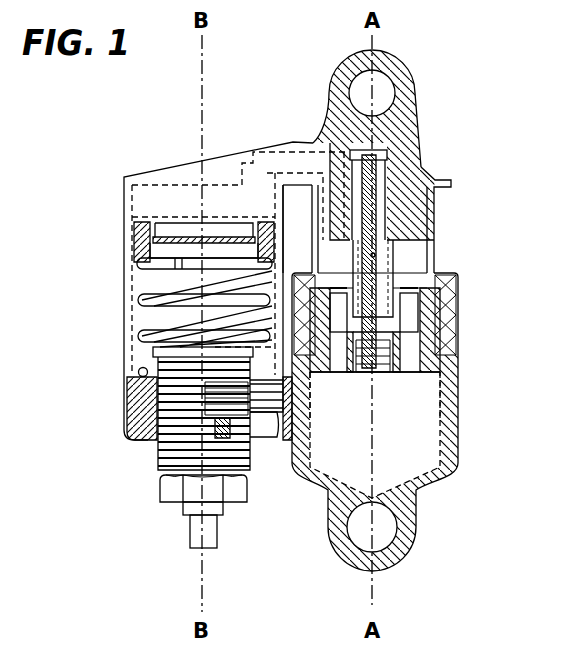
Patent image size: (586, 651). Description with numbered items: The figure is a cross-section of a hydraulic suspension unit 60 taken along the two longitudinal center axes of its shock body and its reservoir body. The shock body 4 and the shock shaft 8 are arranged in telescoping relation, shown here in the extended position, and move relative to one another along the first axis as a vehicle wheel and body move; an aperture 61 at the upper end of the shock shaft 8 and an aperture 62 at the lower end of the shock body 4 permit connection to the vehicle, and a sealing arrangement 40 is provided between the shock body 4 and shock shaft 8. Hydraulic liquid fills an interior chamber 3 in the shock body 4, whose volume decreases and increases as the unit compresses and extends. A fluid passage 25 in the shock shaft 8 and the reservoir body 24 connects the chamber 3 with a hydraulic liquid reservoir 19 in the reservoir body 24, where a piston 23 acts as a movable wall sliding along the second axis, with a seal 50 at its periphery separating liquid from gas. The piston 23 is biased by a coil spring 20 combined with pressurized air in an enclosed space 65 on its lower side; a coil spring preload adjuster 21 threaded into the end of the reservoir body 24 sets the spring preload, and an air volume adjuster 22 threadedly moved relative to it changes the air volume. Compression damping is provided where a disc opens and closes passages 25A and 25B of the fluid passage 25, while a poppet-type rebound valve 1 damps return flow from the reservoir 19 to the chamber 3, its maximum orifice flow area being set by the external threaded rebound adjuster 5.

The rebound valve 1 is at (398, 333).
The interior chamber 3 is at (392, 455).
The shock body 4 is at (456, 439).
The threaded rebound adjuster 5 is at (396, 167).
The shock shaft 8 is at (437, 243).
The hydraulic liquid reservoir 19 is at (166, 207).
The coil spring 20 is at (150, 327).
The coil spring preload adjuster 21 is at (152, 410).
The air volume adjuster 22 is at (160, 487).
The piston 23 is at (140, 240).
The reservoir body 24 is at (173, 177).
The fluid passage 25 is at (254, 152).
The passage 25A is at (400, 393).
The passage 25B is at (408, 310).
The sealing arrangement 40 is at (452, 300).
The seal 50 is at (140, 252).
The hydraulic suspension unit 60 is at (462, 140).
The aperture 61 is at (393, 72).
The aperture 62 is at (410, 548).
The enclosed space 65 is at (148, 281).